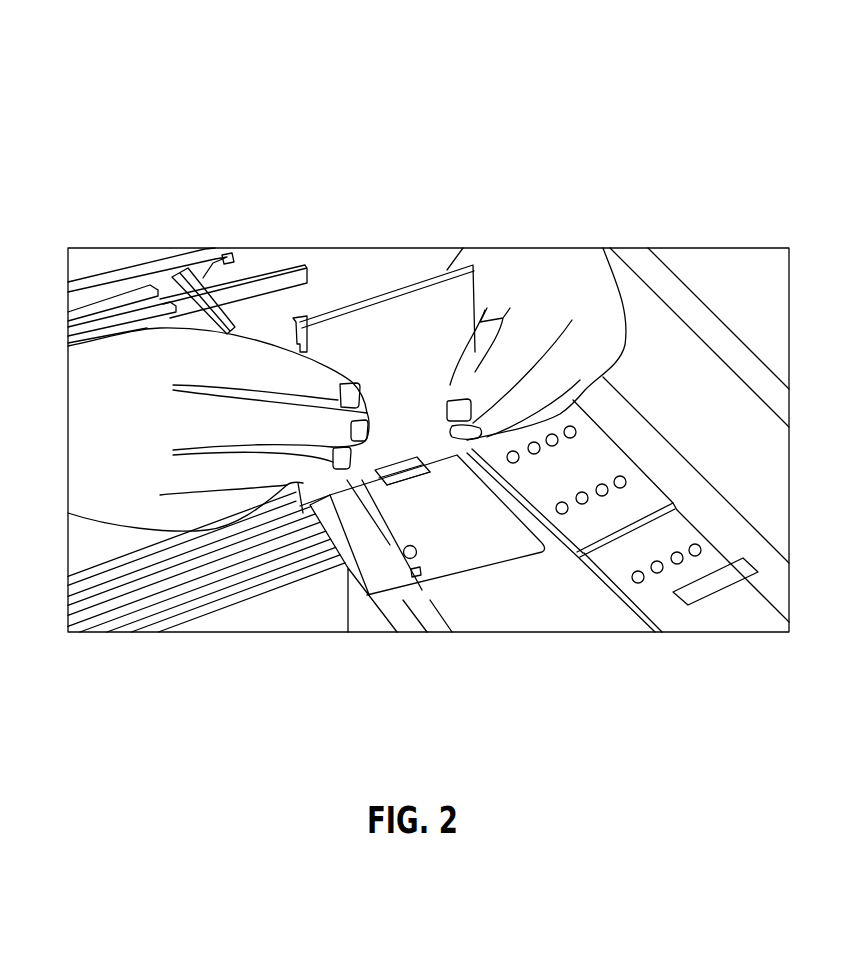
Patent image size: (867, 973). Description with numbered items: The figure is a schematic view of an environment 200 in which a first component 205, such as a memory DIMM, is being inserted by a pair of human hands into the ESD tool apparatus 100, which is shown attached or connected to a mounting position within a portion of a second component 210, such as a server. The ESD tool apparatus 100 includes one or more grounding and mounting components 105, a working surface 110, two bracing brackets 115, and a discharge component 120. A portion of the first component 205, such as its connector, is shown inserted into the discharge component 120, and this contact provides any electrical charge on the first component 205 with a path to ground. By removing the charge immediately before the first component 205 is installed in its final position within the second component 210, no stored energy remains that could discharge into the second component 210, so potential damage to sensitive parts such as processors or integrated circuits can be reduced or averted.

The environment 200 is at (455, 74).
The first component 205 is at (372, 285).
The second component 210 is at (107, 265).
The ESD tool apparatus 100 is at (398, 574).
The grounding and mounting components 105 is at (392, 552).
The working surface 110 is at (500, 540).
The bracing brackets 115 is at (416, 494).
The discharge component 120 is at (362, 473).